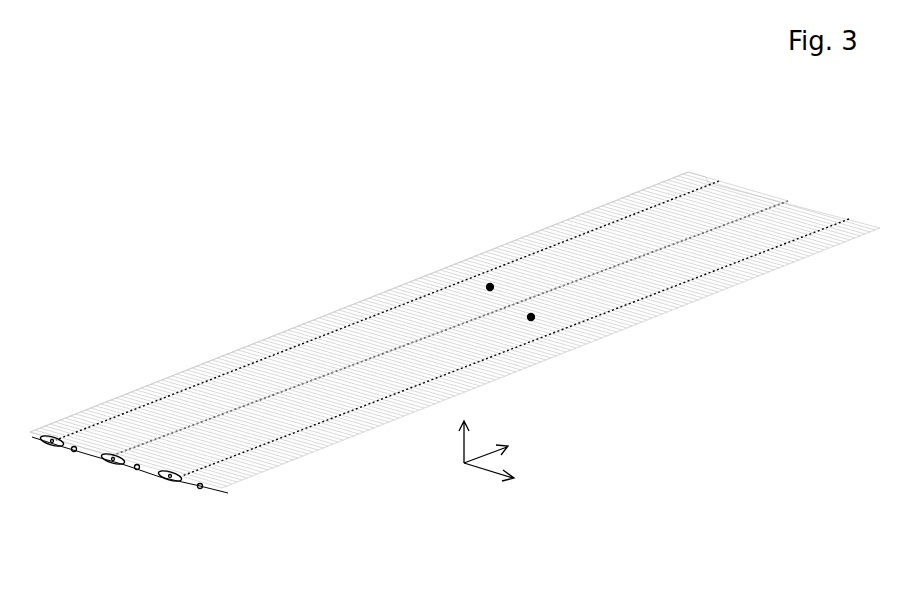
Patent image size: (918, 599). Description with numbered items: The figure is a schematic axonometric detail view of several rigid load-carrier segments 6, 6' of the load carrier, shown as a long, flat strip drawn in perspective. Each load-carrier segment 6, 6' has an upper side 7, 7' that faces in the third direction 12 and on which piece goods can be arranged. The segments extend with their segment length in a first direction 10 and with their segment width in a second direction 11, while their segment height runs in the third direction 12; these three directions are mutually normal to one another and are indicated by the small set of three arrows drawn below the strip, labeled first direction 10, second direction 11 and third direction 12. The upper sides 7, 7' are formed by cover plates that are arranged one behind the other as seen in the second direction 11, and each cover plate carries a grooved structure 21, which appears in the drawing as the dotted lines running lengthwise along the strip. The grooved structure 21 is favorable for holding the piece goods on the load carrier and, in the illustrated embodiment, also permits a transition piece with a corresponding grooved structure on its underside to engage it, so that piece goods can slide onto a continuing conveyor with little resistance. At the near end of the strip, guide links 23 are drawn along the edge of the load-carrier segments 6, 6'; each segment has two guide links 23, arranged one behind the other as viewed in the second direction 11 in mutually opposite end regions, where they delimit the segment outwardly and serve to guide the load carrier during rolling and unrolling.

The load-carrier segment 6 is at (455, 308).
The load-carrier segment 6' is at (425, 280).
The upper side 7 is at (590, 374).
The upper side 7' is at (425, 230).
The grooved structure 21 is at (852, 150).
The guide link 23 is at (92, 455).
The first direction 10 is at (495, 473).
The second direction 11 is at (498, 459).
The third direction 12 is at (464, 443).